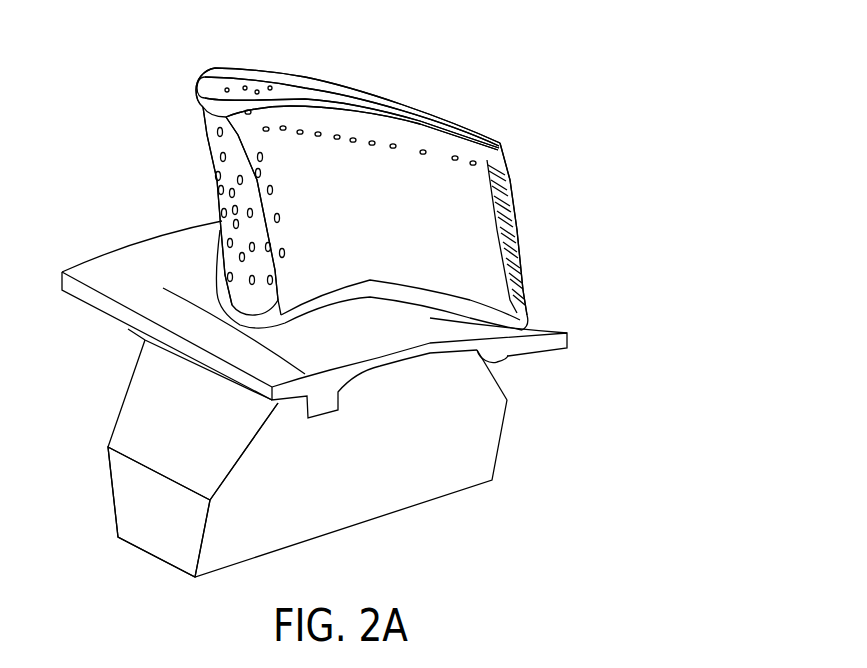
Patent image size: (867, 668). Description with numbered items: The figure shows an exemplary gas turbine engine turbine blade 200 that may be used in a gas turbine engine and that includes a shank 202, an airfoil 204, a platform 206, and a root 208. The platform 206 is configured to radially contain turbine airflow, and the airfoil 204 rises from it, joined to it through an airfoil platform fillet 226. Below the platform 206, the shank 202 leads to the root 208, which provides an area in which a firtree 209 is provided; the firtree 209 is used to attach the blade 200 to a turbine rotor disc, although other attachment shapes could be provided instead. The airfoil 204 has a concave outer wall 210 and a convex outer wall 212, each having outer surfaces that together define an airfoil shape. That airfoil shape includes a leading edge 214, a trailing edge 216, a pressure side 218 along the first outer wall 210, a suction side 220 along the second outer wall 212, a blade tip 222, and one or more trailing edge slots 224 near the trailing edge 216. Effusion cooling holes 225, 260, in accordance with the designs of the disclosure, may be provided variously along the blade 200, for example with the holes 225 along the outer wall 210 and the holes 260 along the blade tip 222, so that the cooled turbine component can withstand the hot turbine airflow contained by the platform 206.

The turbine blade 200 is at (577, 147).
The shank 202 is at (368, 372).
The airfoil 204 is at (388, 229).
The platform 206 is at (381, 344).
The root 208 is at (165, 397).
The firtree 209 is at (183, 531).
The concave outer wall 210 is at (443, 157).
The convex outer wall 212 is at (352, 98).
The leading edge 214 is at (223, 152).
The trailing edge 216 is at (517, 205).
The pressure side 218 is at (384, 140).
The suction side 220 is at (255, 66).
The blade tip 222 is at (213, 100).
The trailing edge slots 224 is at (503, 259).
The effusion cooling holes 225 is at (300, 133).
The airfoil platform fillet 226 is at (217, 270).
The effusion cooling holes 260 is at (227, 84).